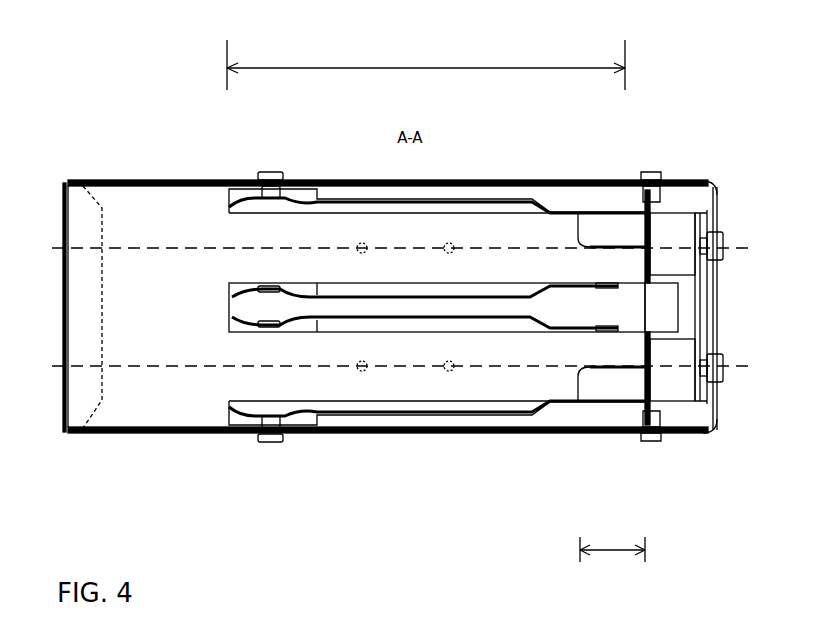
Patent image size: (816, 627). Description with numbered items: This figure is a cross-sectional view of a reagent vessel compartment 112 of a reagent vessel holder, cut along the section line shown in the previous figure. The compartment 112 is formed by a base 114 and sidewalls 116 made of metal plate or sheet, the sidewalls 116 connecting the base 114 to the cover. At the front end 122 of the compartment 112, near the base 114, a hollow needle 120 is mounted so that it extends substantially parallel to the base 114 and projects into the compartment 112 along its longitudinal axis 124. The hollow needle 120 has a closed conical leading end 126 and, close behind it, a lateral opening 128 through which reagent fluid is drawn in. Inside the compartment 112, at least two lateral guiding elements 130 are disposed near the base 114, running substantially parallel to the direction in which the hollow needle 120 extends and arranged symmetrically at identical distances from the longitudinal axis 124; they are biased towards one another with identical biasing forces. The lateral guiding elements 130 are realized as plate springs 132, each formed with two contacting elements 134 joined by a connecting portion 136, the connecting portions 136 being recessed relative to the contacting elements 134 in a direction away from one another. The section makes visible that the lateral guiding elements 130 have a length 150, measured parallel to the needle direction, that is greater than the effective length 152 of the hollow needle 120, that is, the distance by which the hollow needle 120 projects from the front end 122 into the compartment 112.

The reagent vessel compartment 112 is at (240, 353).
The base 114 is at (122, 413).
The sidewalls 116 is at (500, 178).
The hollow needle 120 is at (660, 178).
The front end 122 is at (720, 266).
The longitudinal axis 124 is at (548, 237).
The conical leading end 126 is at (580, 235).
The lateral opening 128 is at (626, 240).
The lateral guiding elements 130 is at (437, 316).
The plate springs 132 is at (357, 196).
The contacting elements 134 is at (272, 176).
The connecting portion 136 is at (446, 190).
The length 150 is at (483, 54).
The effective length 152 is at (613, 545).